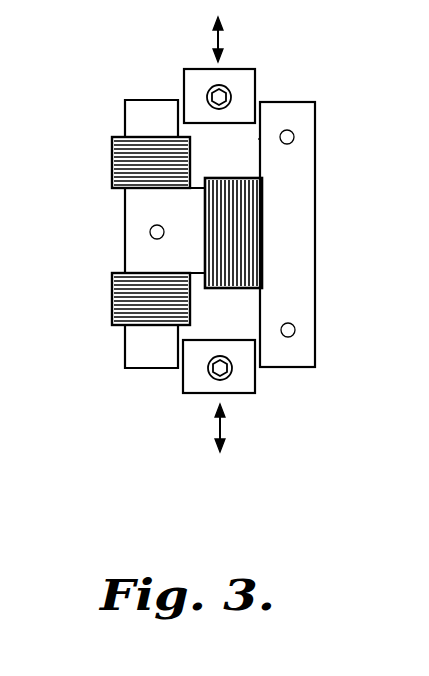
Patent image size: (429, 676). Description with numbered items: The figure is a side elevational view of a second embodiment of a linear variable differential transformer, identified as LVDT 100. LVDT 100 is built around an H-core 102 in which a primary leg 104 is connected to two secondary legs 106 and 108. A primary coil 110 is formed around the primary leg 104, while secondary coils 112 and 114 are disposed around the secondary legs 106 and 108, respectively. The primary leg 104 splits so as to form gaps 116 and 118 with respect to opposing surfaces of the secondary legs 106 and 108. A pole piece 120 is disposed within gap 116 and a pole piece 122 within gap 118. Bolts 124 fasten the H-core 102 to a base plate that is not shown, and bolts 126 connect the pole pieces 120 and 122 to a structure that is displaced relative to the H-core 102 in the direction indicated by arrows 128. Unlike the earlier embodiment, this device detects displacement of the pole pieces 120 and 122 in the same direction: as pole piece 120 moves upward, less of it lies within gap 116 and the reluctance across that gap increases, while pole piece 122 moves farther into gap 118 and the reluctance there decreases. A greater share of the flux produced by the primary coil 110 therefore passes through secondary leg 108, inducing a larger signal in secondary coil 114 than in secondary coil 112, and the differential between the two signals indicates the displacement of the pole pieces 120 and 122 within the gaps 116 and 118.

The LVDT 100 is at (115, 372).
The H-core 102 is at (127, 213).
The primary leg 104 is at (293, 220).
The secondary leg 106 is at (125, 118).
The secondary leg 108 is at (128, 347).
The primary coil 110 is at (248, 258).
The secondary coil 112 is at (120, 163).
The secondary coil 114 is at (117, 298).
The gap 116 is at (259, 138).
The gap 118 is at (260, 315).
The pole piece 120 is at (187, 80).
The pole piece 122 is at (187, 385).
The bolts 124 is at (150, 236).
The bolts 126 is at (232, 95).
The arrows 128 is at (223, 40).